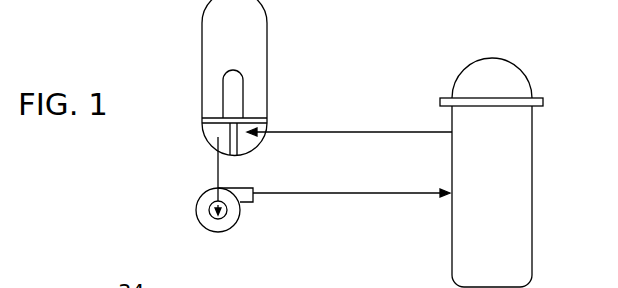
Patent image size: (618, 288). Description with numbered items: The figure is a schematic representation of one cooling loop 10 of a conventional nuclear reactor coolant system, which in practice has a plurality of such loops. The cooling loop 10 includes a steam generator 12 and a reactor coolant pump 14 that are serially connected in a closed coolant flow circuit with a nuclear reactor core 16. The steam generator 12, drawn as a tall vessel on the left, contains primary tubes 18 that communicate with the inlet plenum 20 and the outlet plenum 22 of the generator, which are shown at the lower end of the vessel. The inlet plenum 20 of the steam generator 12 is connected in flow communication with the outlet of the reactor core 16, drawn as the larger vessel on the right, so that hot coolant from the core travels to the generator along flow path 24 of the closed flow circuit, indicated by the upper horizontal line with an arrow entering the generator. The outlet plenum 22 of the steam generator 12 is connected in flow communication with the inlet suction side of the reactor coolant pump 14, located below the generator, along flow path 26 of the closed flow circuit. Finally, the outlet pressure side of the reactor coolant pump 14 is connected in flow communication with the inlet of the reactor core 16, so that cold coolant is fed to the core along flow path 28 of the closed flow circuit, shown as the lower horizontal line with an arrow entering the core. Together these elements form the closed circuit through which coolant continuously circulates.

The cooling loop 10 is at (338, 72).
The steam generator 12 is at (268, 50).
The reactor coolant pump 14 is at (200, 204).
The nuclear reactor core 16 is at (506, 225).
The primary tubes 18 is at (228, 70).
The inlet plenum 20 is at (243, 146).
The outlet plenum 22 is at (210, 137).
The flow path 24 is at (337, 132).
The flow path 26 is at (216, 172).
The flow path 28 is at (317, 191).